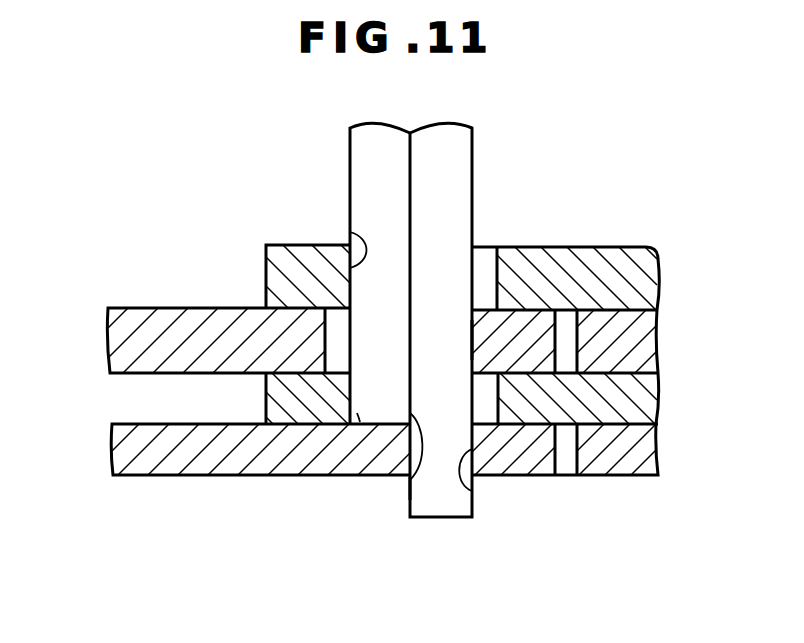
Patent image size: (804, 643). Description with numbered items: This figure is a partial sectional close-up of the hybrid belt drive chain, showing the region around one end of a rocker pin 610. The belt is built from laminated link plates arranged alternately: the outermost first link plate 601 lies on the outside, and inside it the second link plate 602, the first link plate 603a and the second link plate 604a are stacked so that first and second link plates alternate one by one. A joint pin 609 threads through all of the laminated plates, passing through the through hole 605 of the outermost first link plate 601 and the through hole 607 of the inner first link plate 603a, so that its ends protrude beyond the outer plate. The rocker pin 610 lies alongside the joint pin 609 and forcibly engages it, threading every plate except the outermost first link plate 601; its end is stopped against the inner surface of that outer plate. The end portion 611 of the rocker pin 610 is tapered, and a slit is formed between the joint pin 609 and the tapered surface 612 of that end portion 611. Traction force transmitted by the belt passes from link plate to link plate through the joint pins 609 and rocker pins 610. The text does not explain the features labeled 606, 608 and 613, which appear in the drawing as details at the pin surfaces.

The first link plate 601 is at (190, 470).
The second link plate 602 is at (282, 412).
The first link plate 603a is at (197, 317).
The second link plate 604a is at (267, 250).
The through hole 605 is at (474, 493).
The sleeve wall portion 606 is at (353, 392).
The through hole 607 is at (472, 340).
The upper seal ring 608 is at (350, 232).
The joint pin 609 is at (458, 207).
The rocker pin 610 is at (362, 180).
The end portion 611 is at (358, 414).
The tapered surface 612 is at (409, 478).
The bulge portion 613 is at (407, 423).